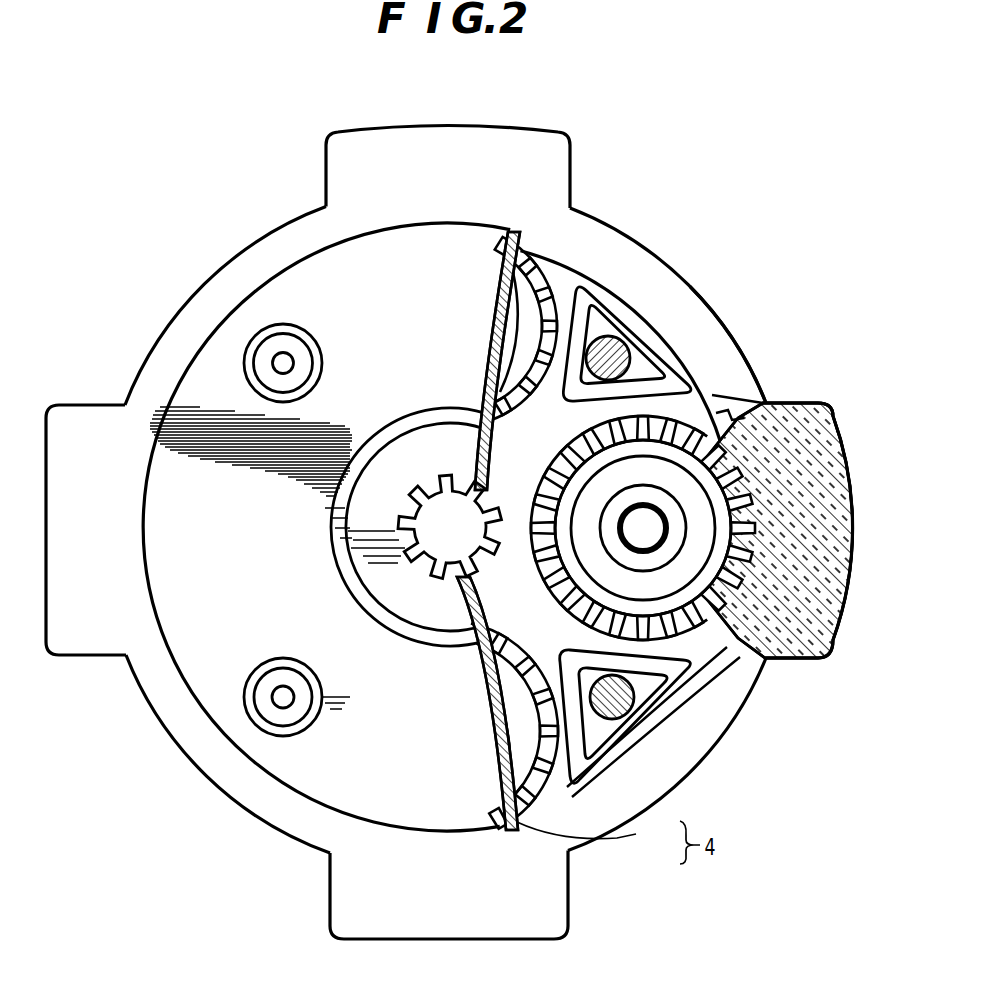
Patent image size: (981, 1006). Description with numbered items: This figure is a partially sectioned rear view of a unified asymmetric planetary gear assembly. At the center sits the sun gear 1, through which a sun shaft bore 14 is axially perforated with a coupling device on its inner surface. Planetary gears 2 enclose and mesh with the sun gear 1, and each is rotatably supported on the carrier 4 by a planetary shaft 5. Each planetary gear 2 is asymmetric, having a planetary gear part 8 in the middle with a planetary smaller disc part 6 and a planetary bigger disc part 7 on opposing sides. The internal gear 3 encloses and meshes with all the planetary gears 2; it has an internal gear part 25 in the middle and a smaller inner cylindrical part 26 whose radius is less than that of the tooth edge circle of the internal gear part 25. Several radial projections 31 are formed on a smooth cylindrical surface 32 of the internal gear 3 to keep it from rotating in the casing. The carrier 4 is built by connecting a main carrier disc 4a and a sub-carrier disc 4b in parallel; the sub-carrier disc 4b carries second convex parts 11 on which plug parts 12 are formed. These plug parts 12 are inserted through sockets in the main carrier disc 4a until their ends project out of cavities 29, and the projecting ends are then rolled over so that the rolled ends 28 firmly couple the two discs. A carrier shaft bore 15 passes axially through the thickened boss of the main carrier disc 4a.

The sun gear 1 is at (452, 575).
The planetary gear 2 is at (592, 132).
The internal gear 3 is at (740, 268).
The carrier 4 is at (307, 845).
The main carrier disc 4a is at (604, 838).
The sub-carrier disc 4b is at (572, 797).
The planetary shaft 5 is at (657, 533).
The planetary smaller disc part 6 is at (522, 258).
The planetary bigger disc part 7 is at (545, 280).
The planetary gear part 8 is at (532, 265).
The second convex part 11 is at (624, 728).
The plug part 12 is at (632, 720).
The sun shaft bore 14 is at (450, 577).
The carrier shaft bore 15 is at (412, 553).
The internal gear part 25 is at (725, 393).
The smaller inner cylindrical part 26 is at (670, 358).
The rolled end 28 is at (252, 346).
The cavity 29 is at (264, 350).
The radial projection 31 is at (823, 406).
The smooth cylindrical surface 32 is at (716, 313).